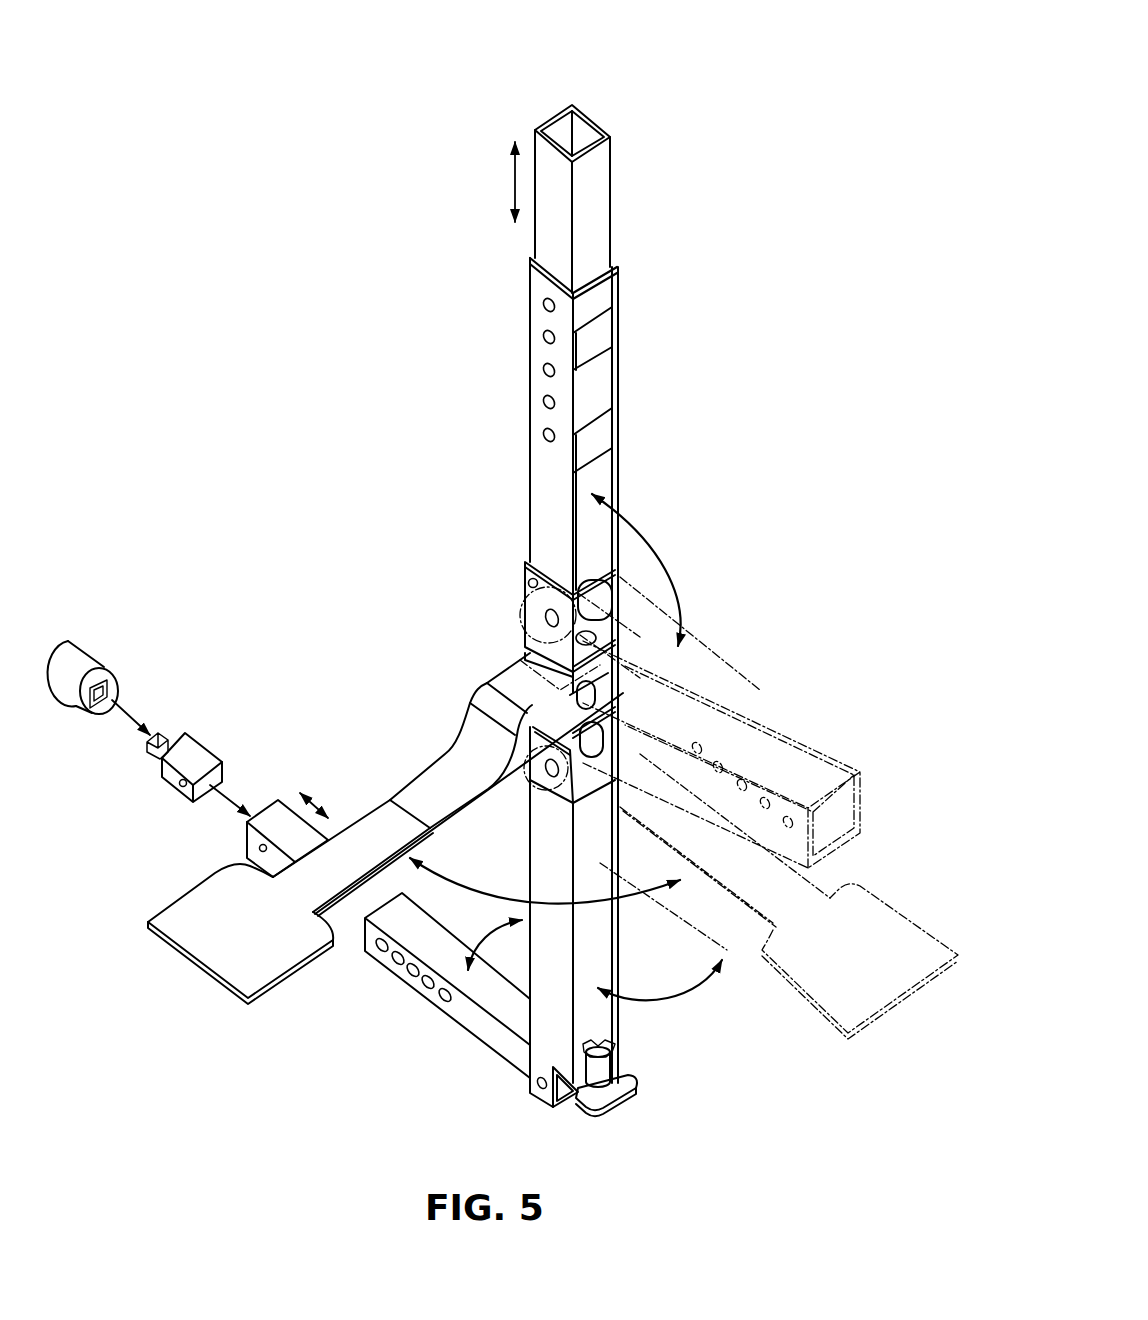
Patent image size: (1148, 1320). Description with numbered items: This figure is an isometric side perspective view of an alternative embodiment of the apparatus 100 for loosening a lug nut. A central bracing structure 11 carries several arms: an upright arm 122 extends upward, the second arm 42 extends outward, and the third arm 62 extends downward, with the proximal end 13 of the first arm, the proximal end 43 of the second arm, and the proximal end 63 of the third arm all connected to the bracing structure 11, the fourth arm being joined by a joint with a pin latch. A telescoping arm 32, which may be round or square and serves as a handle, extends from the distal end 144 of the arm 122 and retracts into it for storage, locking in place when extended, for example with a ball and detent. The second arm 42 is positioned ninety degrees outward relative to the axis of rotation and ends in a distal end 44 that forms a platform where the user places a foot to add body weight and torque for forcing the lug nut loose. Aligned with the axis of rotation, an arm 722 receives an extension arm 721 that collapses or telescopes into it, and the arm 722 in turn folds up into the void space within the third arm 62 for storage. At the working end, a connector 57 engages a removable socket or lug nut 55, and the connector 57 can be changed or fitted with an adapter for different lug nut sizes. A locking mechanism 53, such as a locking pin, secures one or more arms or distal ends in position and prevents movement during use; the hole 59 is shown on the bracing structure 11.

The apparatus 100 is at (752, 50).
The telescoping arm 32 is at (598, 207).
The distal end 144 is at (535, 268).
The arm 122 is at (540, 495).
The proximal end 13 is at (576, 588).
The hole 59 is at (530, 582).
The bracing structure 11 is at (525, 625).
The proximal end 43 is at (597, 693).
The proximal end 63 is at (600, 747).
The second arm 42 is at (478, 735).
The extension arm 721 is at (277, 812).
The connector 57 is at (192, 750).
The socket or lug nut 55 is at (75, 660).
The distal end 44 is at (170, 912).
The third arm 62 is at (542, 868).
The arm 722 is at (468, 1020).
The locking mechanism 53 is at (608, 1065).